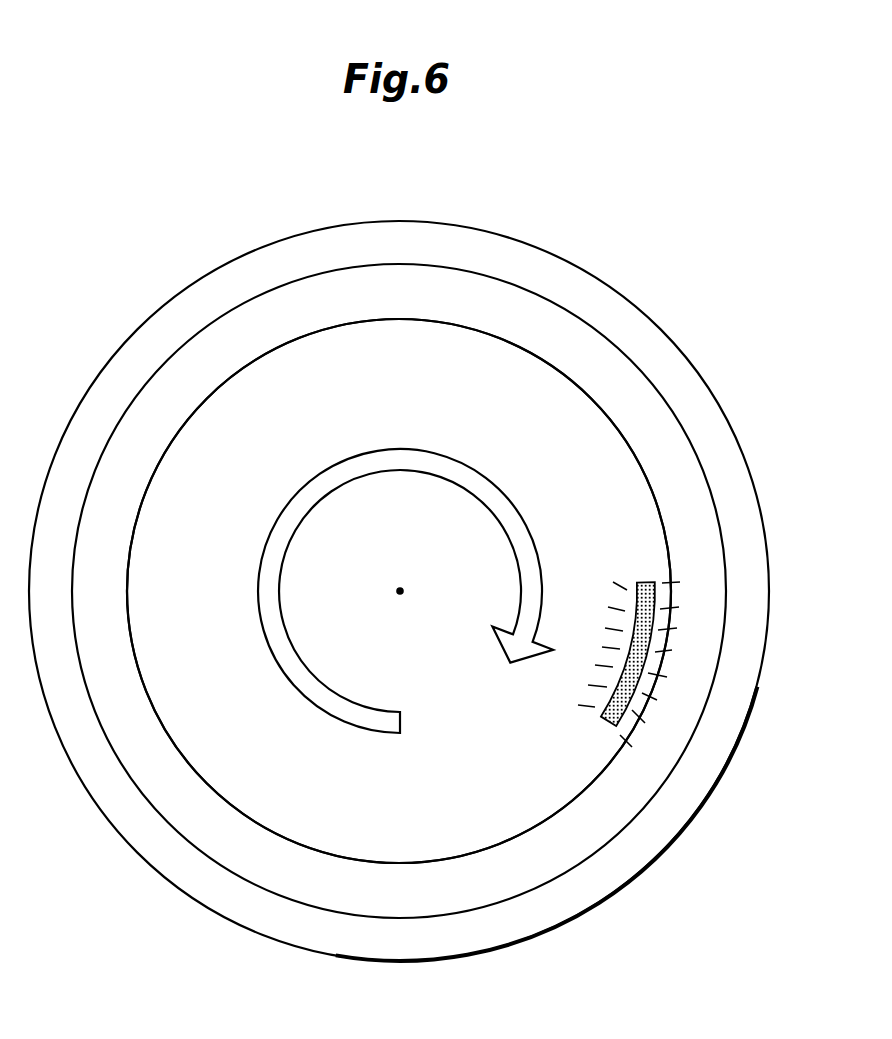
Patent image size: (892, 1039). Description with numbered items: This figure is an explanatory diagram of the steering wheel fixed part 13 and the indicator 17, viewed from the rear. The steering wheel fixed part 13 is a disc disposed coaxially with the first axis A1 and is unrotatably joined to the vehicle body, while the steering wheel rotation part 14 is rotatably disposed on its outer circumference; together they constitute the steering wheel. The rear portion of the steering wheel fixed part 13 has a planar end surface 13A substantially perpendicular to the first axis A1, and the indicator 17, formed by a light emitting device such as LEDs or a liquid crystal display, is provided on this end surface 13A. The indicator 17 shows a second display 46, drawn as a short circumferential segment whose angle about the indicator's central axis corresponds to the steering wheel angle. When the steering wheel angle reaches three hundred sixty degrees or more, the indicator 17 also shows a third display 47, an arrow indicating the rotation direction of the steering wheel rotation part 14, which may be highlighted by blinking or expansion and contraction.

The steering wheel fixed part 13 is at (463, 287).
The end surface 13A is at (258, 308).
The steering wheel rotation part 14 is at (622, 295).
The indicator 17 is at (457, 825).
The second display 46 is at (643, 663).
The third display 47 is at (438, 465).
The first axis A1 is at (404, 591).